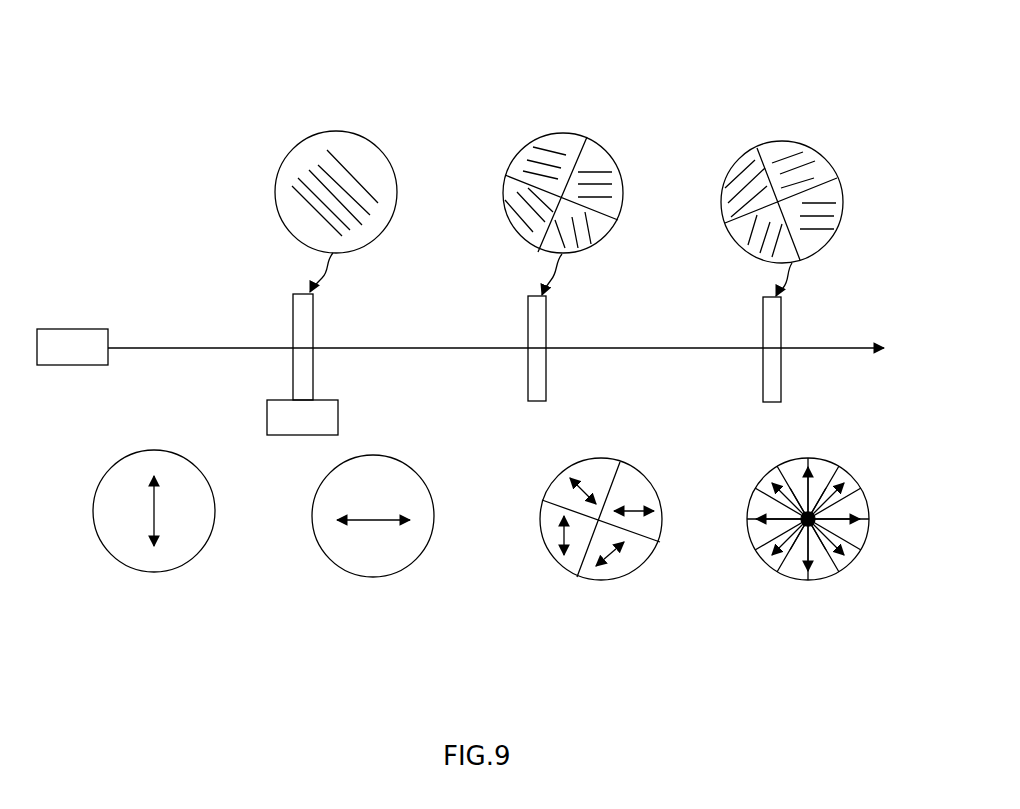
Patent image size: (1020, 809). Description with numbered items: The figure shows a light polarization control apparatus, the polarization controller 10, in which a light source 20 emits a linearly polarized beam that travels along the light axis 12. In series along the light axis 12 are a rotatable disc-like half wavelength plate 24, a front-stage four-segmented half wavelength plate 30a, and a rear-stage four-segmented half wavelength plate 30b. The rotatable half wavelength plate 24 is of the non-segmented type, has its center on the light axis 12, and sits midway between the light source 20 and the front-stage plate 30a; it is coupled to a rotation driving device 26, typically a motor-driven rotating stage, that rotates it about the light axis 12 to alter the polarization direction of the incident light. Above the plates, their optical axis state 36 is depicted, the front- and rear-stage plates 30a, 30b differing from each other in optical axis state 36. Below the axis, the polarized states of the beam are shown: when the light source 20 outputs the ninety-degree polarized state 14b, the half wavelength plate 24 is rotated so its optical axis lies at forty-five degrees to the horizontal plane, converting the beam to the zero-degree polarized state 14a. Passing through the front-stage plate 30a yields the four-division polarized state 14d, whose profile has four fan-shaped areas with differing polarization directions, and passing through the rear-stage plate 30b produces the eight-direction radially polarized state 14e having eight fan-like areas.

The polarization controller 10 is at (480, 98).
The light axis 12 is at (350, 347).
The light source 20 is at (82, 329).
The rotatable λ/2 plate 24 is at (293, 321).
The rotation driving device 26 is at (306, 437).
The front-stage four-segmented λ/2 plate 30a is at (527, 328).
The rear-stage four-segmented λ/2 plate 30b is at (763, 327).
The optical axis state 36 is at (328, 132).
The 0-degree polarized state 14a is at (428, 351).
The 90-degree polarized state 14b is at (205, 350).
The four-division polarized state 14d is at (648, 352).
The eight-direction radially polarized state 14e is at (850, 352).